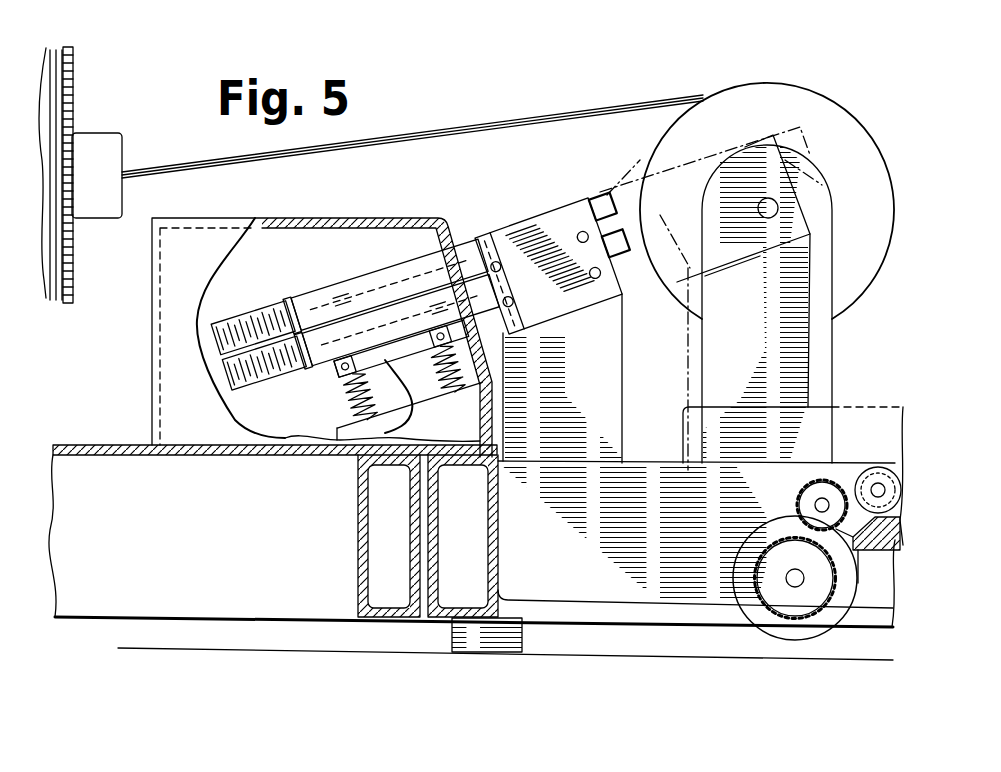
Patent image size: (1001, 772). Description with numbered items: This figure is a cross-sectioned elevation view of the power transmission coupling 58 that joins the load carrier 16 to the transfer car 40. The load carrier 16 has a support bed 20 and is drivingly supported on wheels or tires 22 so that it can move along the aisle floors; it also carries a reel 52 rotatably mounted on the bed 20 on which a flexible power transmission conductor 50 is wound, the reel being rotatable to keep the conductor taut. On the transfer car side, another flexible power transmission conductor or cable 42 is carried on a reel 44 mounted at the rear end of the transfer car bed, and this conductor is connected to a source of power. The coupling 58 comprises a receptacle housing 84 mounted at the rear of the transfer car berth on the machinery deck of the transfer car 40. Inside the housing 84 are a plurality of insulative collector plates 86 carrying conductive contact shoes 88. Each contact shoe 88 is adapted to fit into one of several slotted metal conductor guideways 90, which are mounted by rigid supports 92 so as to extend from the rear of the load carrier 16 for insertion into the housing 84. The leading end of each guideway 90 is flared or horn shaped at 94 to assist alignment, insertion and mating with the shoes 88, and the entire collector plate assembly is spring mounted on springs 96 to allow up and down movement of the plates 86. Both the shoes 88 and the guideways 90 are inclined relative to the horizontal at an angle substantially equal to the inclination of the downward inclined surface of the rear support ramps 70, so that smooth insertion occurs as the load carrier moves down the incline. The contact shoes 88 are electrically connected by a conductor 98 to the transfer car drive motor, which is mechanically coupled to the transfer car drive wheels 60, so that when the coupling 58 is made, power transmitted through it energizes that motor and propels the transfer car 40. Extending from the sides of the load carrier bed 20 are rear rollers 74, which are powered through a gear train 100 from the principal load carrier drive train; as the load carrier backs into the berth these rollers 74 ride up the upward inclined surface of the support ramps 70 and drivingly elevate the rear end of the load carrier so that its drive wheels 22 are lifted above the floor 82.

The load carrier 16 is at (845, 385).
The support bed 20 is at (655, 600).
The wheels or tires 22 is at (787, 638).
The transfer car 40 is at (113, 438).
The flexible power transmission conductor or cable 42 is at (50, 50).
The reel 44 is at (75, 82).
The flexible power transmission conductor 50 is at (543, 118).
The reel 52 is at (763, 83).
The power transmission coupling 58 is at (478, 224).
The transfer car drive wheels 60 is at (463, 640).
The inclined support ramps 70 is at (884, 542).
The rear rollers 74 is at (858, 466).
The floor 82 is at (562, 646).
The receptacle housing 84 is at (335, 218).
The insulative collector plates 86 is at (323, 360).
The conductive contact shoes 88 is at (367, 293).
The slotted metal conductor guideways 90 is at (385, 305).
The rigid supports 92 is at (562, 212).
The flared or horn shaped leading end 94 is at (217, 348).
The springs 96 is at (421, 392).
The conductor 98 is at (293, 430).
The gear train 100 is at (783, 490).